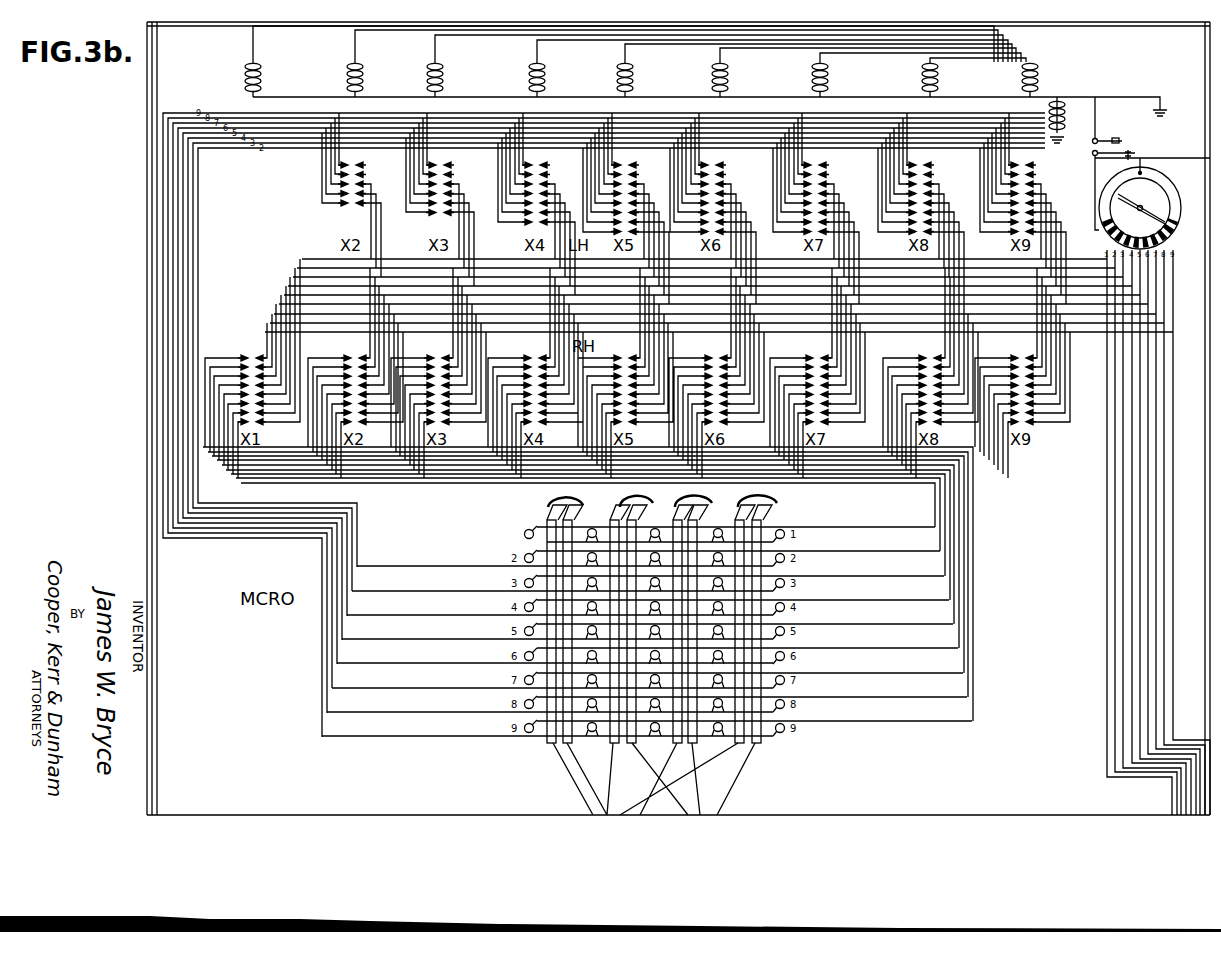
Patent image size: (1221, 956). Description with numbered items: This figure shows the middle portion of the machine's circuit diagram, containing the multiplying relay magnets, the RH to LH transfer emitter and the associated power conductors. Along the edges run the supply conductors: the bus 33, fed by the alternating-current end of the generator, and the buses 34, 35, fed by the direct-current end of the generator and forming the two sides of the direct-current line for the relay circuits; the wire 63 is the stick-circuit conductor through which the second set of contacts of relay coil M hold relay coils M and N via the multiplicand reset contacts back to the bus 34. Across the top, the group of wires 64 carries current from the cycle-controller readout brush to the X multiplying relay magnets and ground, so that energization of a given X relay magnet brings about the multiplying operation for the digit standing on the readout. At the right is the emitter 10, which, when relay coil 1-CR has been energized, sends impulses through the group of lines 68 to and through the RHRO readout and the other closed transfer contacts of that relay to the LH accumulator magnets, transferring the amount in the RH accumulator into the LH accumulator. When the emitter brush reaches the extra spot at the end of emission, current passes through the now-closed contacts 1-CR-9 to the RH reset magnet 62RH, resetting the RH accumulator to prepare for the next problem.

The group of wires 64 is at (1033, 38).
The RH reset magnet 62RH is at (1065, 118).
The relay contacts 1-CR-9 is at (1106, 138).
The relay coil 1-CR is at (1137, 145).
The emitter 10 is at (1166, 189).
The bus 33 is at (1210, 480).
The group of lines 68 is at (1107, 722).
The wire 63 is at (152, 612).
The bus 34 is at (152, 638).
The bus 35 is at (160, 660).